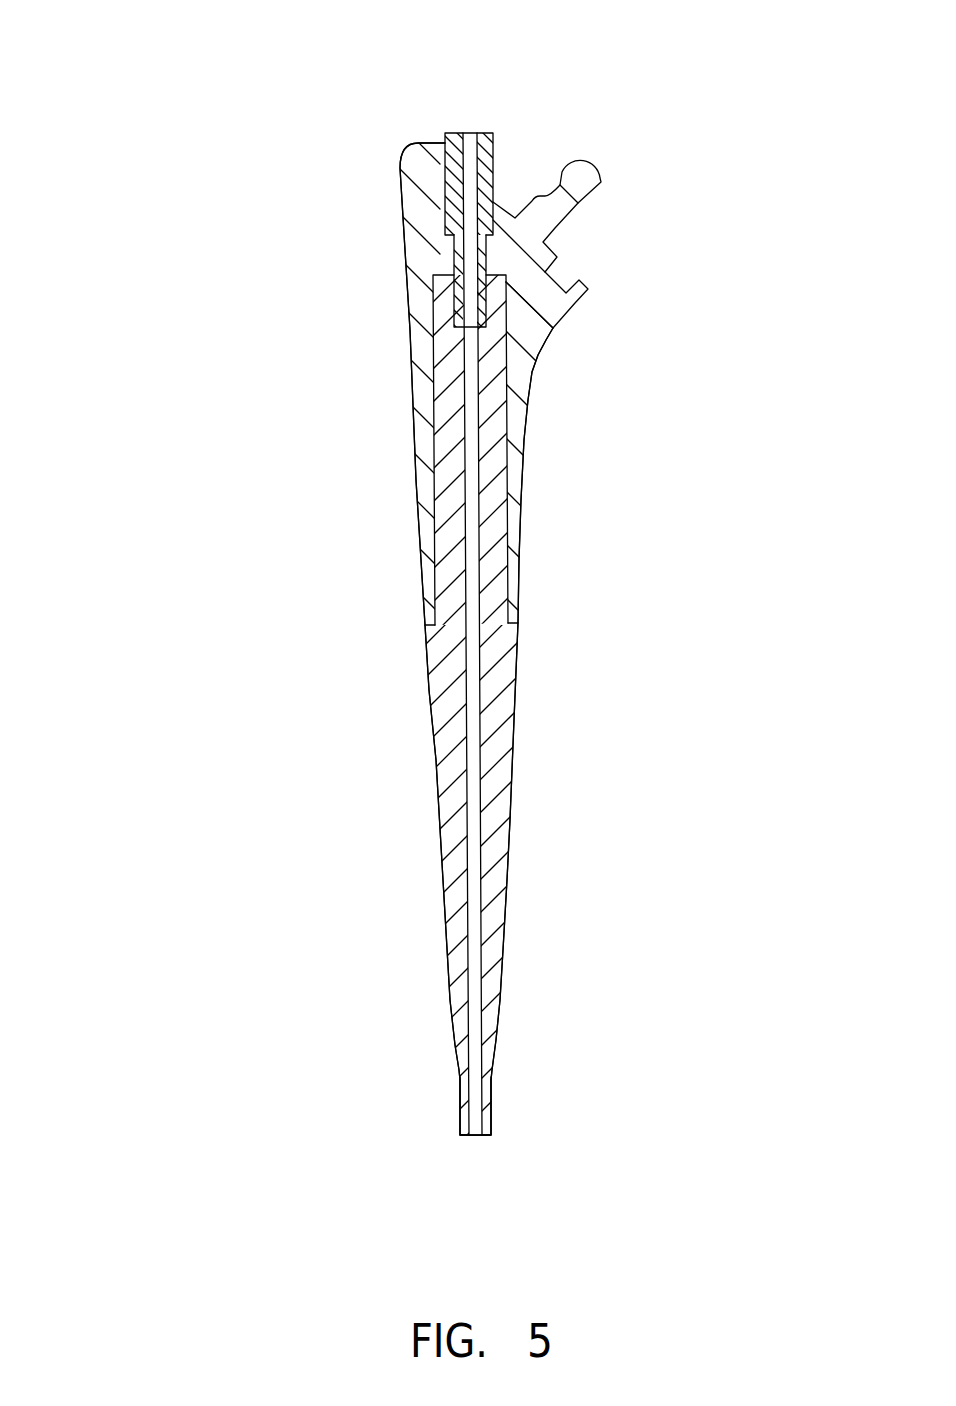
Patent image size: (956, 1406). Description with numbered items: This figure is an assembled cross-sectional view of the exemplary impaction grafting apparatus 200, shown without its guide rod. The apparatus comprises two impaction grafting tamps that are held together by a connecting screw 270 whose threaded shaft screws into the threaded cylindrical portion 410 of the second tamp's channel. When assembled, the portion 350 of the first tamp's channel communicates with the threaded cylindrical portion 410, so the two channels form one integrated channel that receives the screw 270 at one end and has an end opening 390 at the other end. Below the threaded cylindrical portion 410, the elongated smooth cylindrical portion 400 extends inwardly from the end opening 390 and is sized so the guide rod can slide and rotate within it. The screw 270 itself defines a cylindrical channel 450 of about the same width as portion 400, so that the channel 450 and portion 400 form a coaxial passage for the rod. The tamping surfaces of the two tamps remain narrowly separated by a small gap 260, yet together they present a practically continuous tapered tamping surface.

The apparatus 200 is at (185, 168).
The gap 260 is at (511, 622).
The connecting screw 270 is at (515, 127).
The portion of channel 350 is at (460, 263).
The end opening 390 is at (482, 1140).
The elongated smooth cylindrical portion 400 is at (457, 430).
The threaded cylindrical portion 410 is at (448, 302).
The cylindrical channel 450 is at (466, 130).